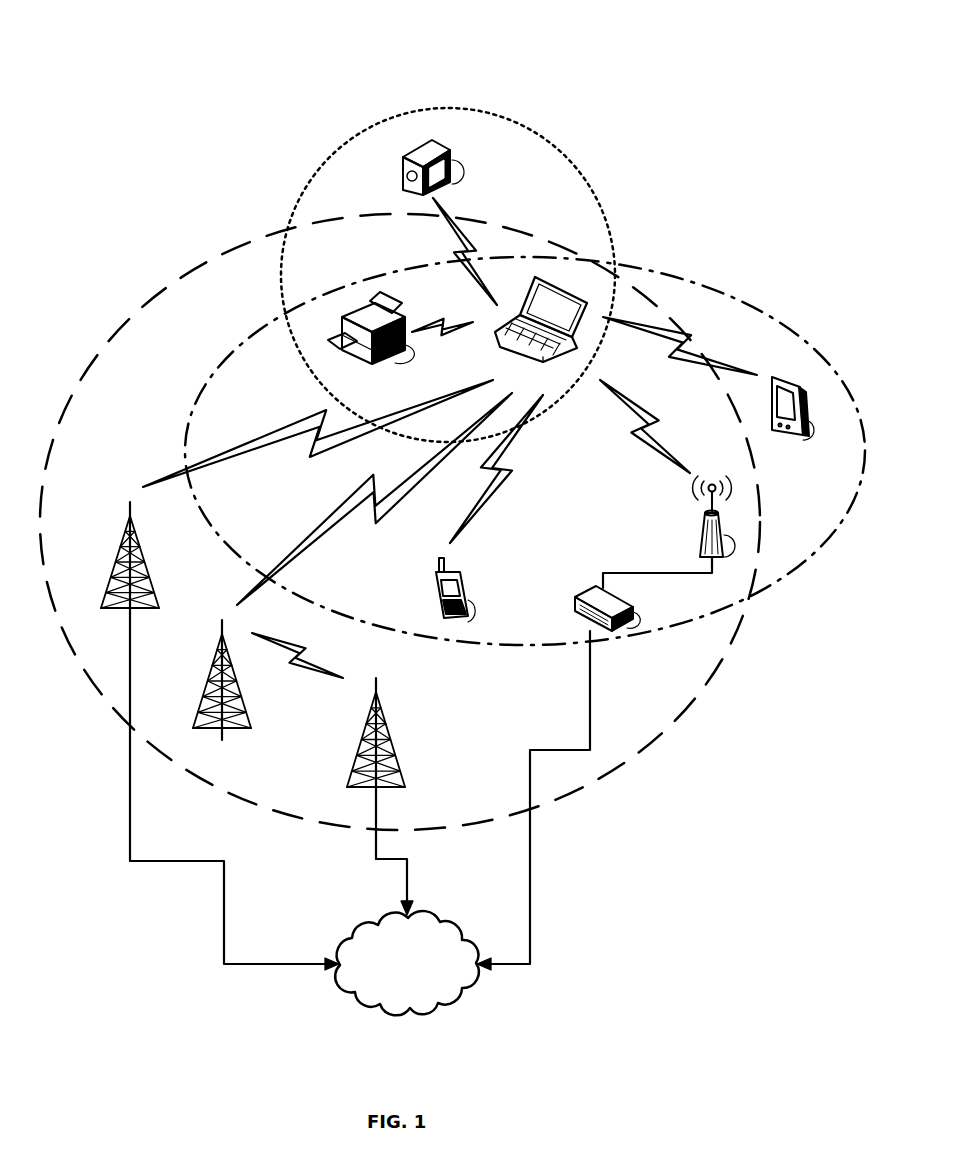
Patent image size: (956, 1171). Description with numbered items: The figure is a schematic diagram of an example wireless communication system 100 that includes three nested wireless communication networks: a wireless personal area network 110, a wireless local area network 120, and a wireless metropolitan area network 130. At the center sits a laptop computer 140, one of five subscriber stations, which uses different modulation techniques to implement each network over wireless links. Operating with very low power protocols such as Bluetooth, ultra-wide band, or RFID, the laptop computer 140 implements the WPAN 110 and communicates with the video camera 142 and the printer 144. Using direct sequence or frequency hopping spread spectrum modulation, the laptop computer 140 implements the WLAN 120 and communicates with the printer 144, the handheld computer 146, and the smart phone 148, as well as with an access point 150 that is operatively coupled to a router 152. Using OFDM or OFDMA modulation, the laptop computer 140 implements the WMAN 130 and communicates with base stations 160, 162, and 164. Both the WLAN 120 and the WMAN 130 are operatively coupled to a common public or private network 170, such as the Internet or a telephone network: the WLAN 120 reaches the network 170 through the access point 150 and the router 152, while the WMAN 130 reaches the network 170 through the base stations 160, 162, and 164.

The wireless communication system 100 is at (452, 513).
The wireless personal area network (WPAN) 110 is at (448, 256).
The wireless local area network (WLAN) 120 is at (171, 424).
The wireless metropolitan area network (WMAN) 130 is at (400, 522).
The laptop computer 140 is at (528, 275).
The video camera 142 is at (452, 167).
The printer 144 is at (381, 341).
The handheld computer 146 is at (769, 388).
The smart phone 148 is at (476, 585).
The access point (AP) 150 is at (669, 532).
The router 152 is at (558, 770).
The base station 160 is at (198, 736).
The base station 162 is at (201, 680).
The base station 164 is at (360, 796).
The common public or private network 170 is at (384, 955).